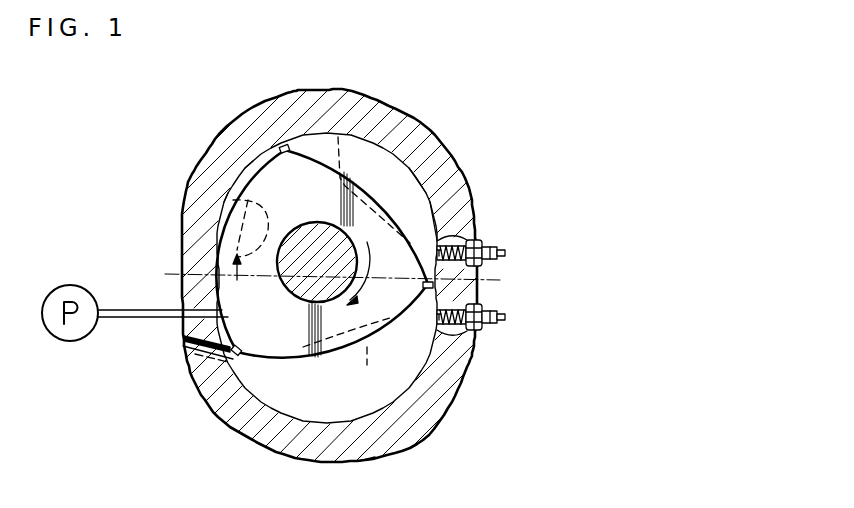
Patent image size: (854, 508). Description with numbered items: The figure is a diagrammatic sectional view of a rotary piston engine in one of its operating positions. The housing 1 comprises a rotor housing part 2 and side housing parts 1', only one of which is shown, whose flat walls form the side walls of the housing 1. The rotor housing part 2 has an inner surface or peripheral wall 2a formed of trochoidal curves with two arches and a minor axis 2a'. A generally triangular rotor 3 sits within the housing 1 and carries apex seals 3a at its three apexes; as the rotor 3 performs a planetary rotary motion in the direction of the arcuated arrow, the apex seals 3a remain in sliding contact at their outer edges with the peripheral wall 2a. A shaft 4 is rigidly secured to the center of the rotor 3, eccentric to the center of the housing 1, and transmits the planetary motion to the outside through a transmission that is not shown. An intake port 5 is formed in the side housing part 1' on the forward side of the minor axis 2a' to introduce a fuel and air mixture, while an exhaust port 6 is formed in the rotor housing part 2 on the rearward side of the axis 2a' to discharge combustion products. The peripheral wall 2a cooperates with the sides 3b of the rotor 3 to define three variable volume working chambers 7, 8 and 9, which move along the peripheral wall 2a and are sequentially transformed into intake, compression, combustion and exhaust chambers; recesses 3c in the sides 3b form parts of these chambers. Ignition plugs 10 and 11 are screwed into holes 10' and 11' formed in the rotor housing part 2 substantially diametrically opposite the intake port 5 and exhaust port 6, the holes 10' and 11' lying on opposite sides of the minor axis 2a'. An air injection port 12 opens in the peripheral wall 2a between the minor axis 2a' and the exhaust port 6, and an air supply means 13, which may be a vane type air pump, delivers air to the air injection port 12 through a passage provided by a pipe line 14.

The housing 1 is at (329, 266).
The side housing part 1' is at (448, 173).
The rotor housing part 2 is at (404, 123).
The peripheral wall 2a is at (473, 208).
The trochoidal minor axis 2a' is at (258, 295).
The rotor 3 is at (403, 307).
The apex seal 3a is at (287, 147).
The side of the rotor 3b is at (258, 160).
The recess 3c is at (177, 229).
The shaft 4 is at (317, 222).
The intake port 5 is at (223, 200).
The exhaust port 6 is at (185, 353).
The working chamber 7 is at (256, 181).
The working chamber 8 is at (395, 172).
The working chamber 9 is at (373, 452).
The ignition plug 10 is at (493, 332).
The hole 10' is at (476, 357).
The ignition plug 11 is at (493, 248).
The hole 11' is at (478, 224).
The air injection port 12 is at (187, 310).
The air supply means 13 is at (45, 298).
The pipe line 14 is at (125, 309).